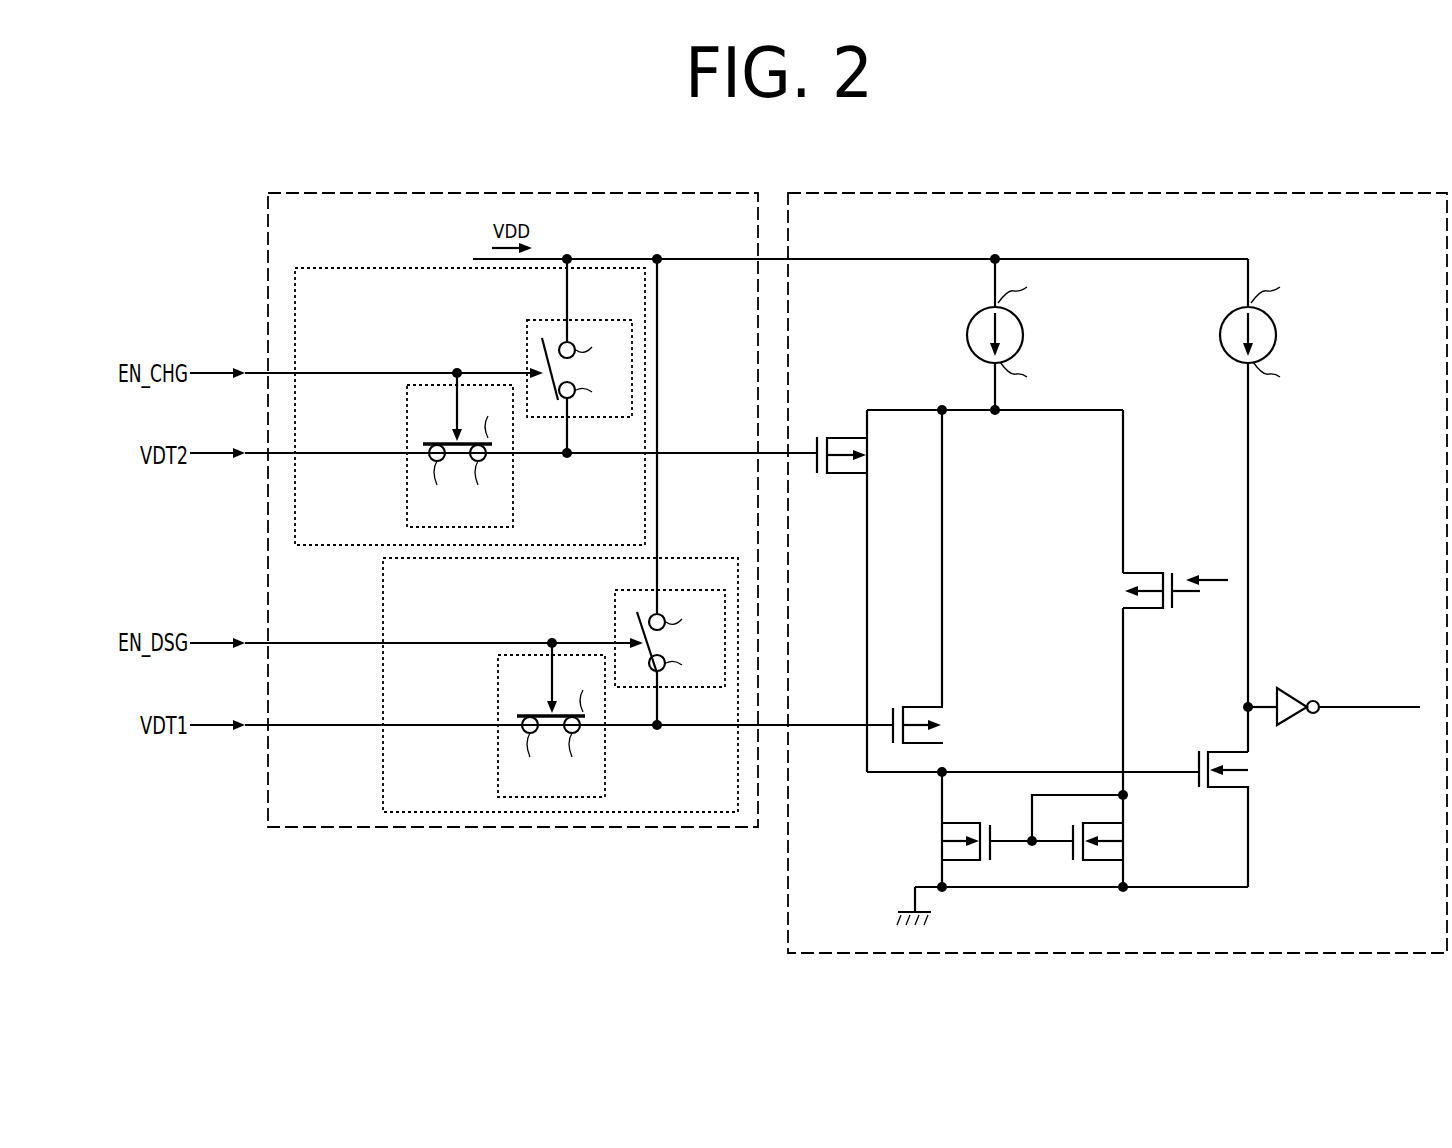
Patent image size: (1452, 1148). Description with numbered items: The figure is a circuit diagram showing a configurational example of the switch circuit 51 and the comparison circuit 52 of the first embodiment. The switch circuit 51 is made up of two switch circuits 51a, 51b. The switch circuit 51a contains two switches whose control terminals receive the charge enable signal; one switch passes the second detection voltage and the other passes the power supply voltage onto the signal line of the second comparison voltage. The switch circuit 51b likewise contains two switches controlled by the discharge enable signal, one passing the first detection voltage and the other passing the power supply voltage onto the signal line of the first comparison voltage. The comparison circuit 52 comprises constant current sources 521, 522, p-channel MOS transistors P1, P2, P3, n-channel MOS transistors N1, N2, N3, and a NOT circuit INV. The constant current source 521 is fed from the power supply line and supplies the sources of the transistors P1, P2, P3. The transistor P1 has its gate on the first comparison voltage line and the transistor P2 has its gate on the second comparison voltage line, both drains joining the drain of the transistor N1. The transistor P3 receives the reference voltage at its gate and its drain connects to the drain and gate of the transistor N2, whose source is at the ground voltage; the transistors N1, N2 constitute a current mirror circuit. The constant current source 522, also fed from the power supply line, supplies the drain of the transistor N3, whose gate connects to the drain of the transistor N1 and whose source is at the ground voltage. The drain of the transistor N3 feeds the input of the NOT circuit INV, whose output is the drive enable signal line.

The switch circuit 51 is at (695, 193).
The switch circuit 51a is at (296, 268).
The switch circuit 51b is at (383, 573).
The comparison circuit 52 is at (1387, 193).
The constant current source 521 is at (967, 335).
The constant current source 522 is at (1220, 335).
The transistor P1 is at (920, 707).
The transistor P2 is at (848, 475).
The transistor P3 is at (1145, 612).
The transistor N1 is at (965, 822).
The transistor N2 is at (1100, 822).
The transistor N3 is at (1230, 788).
The NOT circuit INV is at (1292, 718).